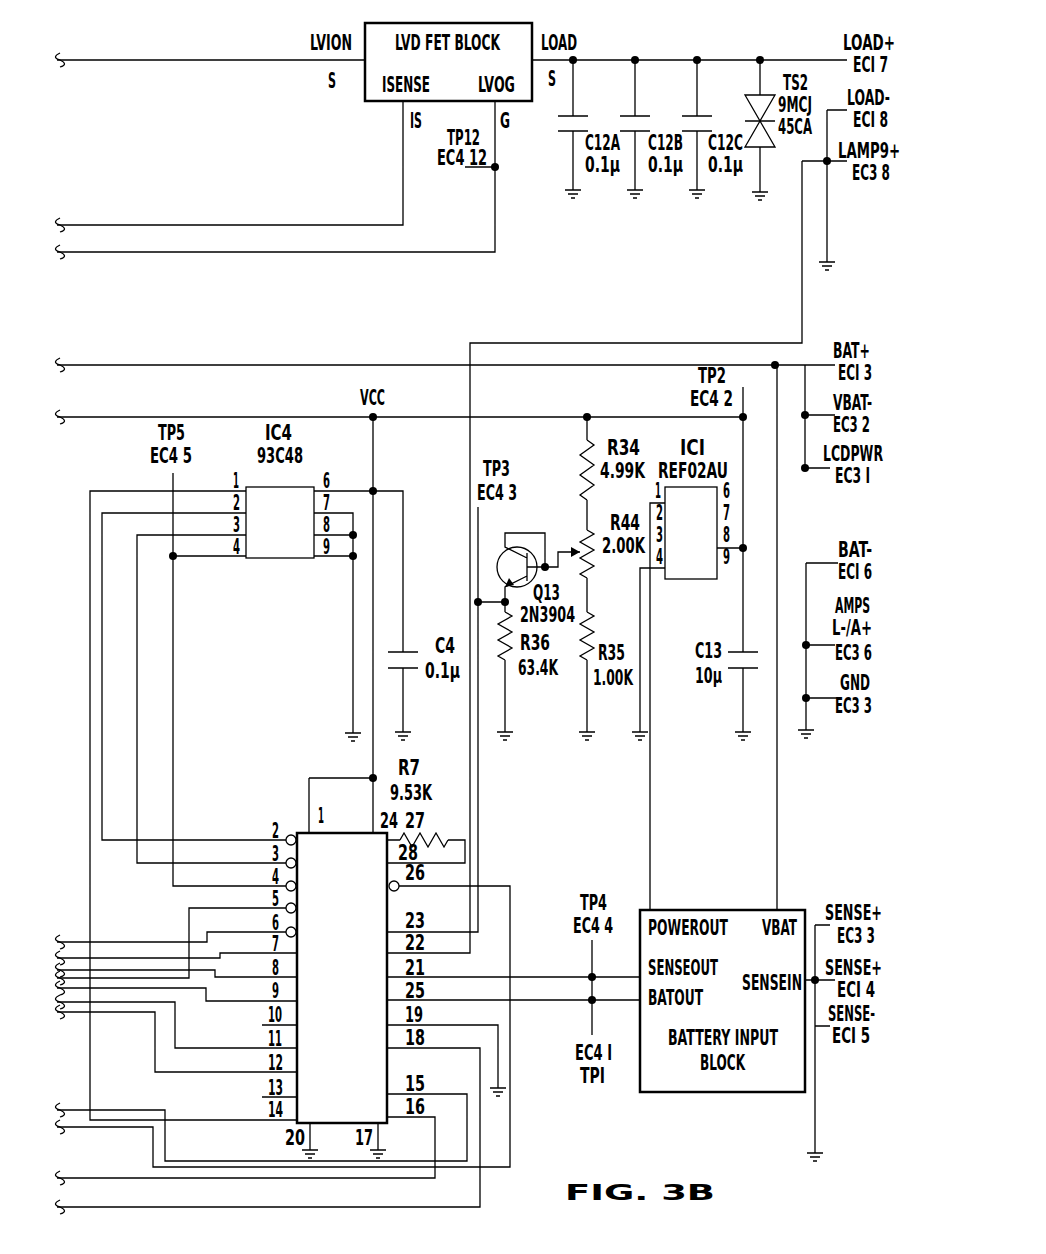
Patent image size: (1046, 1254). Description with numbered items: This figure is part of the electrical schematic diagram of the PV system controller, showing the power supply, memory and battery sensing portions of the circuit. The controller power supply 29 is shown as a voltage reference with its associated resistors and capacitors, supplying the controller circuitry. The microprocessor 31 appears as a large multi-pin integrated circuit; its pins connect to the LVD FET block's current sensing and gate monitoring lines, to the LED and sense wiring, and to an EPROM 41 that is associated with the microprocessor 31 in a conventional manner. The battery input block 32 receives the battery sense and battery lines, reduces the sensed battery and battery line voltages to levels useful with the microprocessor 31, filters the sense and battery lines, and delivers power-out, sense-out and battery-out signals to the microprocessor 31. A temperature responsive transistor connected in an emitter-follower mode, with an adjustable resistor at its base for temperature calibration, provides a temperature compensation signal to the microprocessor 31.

The controller power supply 29 is at (690, 579).
The microprocessor 31 is at (355, 833).
The battery input block 32 is at (710, 1092).
The EPROM 41 is at (266, 558).